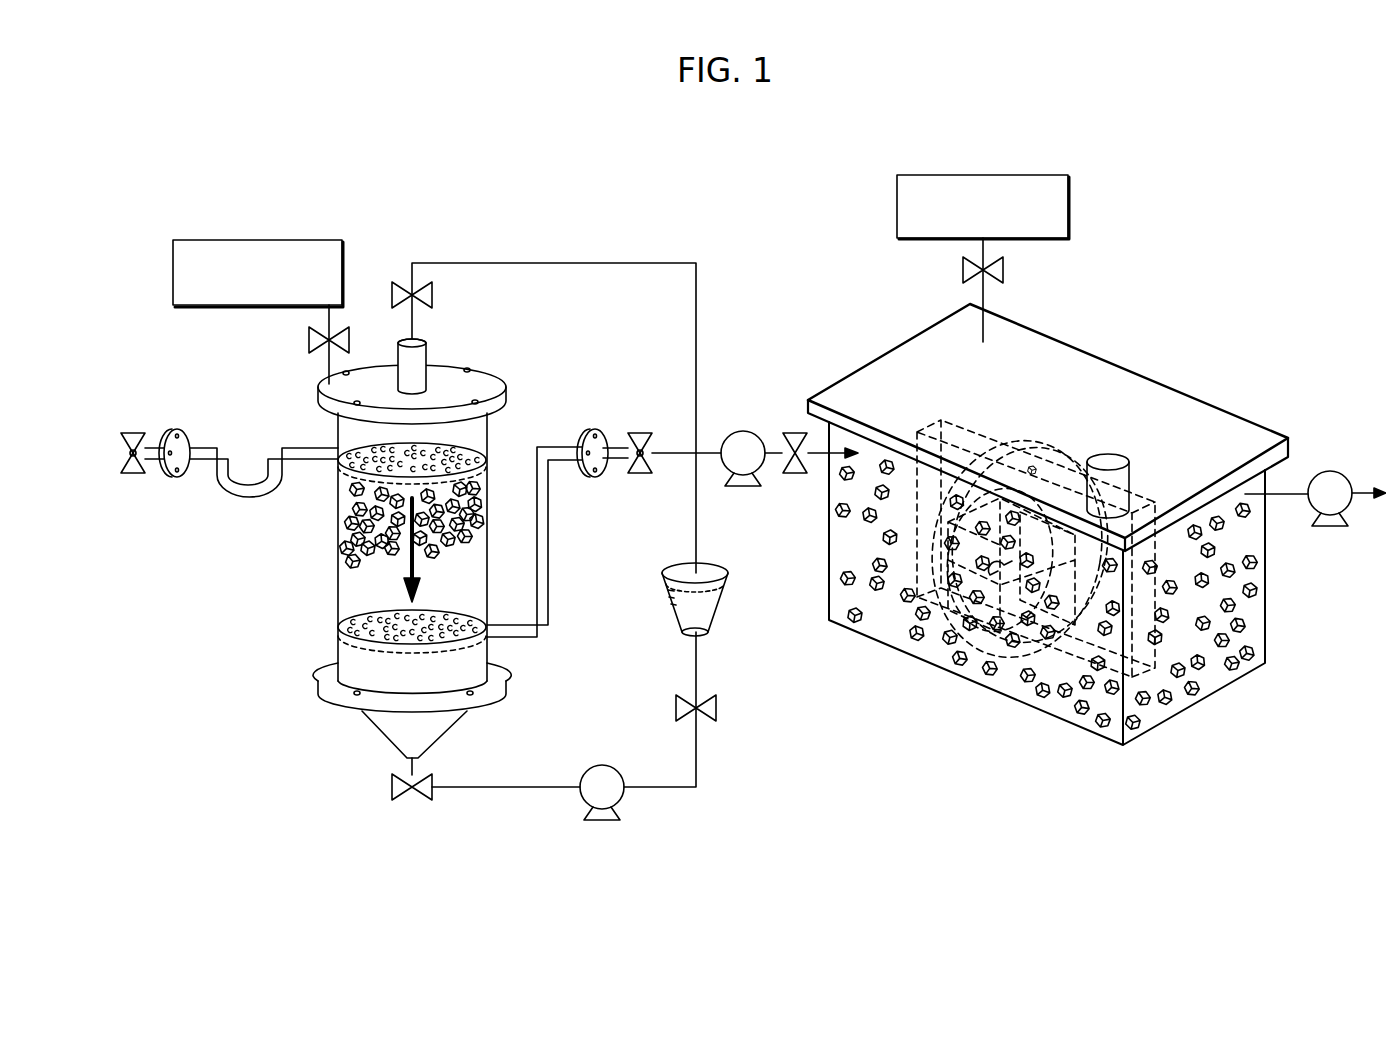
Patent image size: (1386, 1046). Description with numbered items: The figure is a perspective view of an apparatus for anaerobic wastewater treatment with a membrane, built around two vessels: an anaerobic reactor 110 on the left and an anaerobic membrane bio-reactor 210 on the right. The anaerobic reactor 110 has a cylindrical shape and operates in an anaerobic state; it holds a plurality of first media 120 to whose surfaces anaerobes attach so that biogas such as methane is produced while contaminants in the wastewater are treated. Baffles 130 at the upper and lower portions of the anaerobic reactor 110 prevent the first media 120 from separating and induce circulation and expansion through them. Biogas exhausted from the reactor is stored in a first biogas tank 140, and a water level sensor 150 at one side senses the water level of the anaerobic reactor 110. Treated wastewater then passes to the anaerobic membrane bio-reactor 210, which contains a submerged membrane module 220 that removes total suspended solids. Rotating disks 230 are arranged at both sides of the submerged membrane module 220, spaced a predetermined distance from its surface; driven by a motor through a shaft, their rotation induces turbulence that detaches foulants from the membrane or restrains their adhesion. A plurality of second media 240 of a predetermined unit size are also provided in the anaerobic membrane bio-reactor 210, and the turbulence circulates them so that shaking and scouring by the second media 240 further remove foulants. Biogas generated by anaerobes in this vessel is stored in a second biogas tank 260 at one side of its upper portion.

The anaerobic reactor 110 is at (345, 606).
The first media 120 is at (342, 545).
The baffles 130 is at (347, 480).
The first biogas tank 140 is at (310, 240).
The water level sensor 150 is at (722, 601).
The anaerobic membrane bio-reactor 210 is at (1267, 618).
The submerged membrane module 220 is at (930, 428).
The rotating disk 230 is at (1055, 455).
The second media 240 is at (1245, 657).
The second biogas tank 260 is at (920, 175).